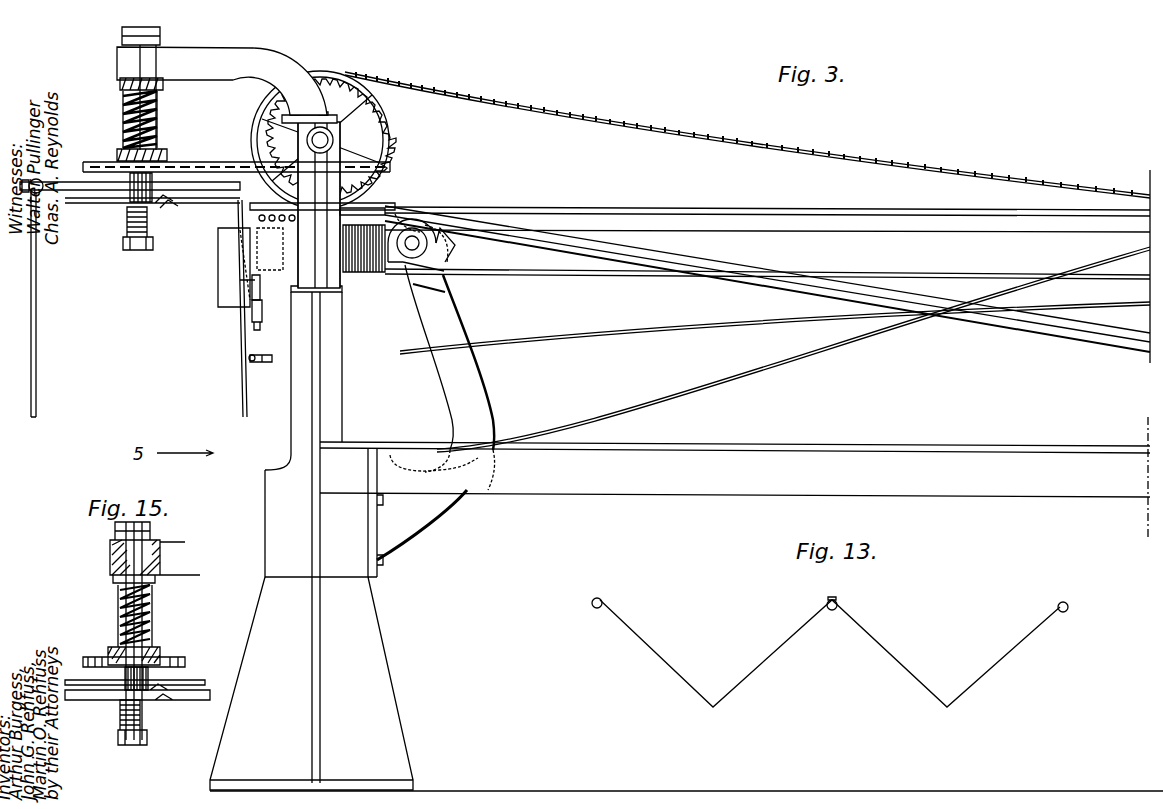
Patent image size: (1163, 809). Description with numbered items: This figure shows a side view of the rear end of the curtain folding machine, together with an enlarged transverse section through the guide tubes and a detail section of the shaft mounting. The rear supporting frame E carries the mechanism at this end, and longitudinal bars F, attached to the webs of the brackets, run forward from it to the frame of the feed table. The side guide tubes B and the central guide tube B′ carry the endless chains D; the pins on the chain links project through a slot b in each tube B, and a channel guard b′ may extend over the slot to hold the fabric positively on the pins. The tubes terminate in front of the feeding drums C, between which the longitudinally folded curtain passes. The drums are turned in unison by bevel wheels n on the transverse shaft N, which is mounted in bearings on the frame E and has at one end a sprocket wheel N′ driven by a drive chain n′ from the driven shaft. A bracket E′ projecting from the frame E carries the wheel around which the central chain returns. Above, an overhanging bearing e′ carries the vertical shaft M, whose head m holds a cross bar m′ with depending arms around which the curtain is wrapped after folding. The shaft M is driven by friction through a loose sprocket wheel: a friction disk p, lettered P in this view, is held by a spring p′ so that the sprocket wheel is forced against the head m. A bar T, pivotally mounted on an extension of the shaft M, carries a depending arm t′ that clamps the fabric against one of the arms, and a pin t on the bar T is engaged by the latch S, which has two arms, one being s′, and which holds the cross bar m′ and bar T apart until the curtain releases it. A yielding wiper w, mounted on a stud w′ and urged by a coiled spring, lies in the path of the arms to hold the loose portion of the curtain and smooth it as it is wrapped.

In FIG. 3, the rear supporting frame E is at (311, 538).
In FIG. 3, the bracket E′ is at (436, 389).
In FIG. 3, the overhanging bearing e′ is at (222, 81).
In FIG. 15, the overhanging bearing e′ is at (155, 552).
In FIG. 3, the transverse shaft N is at (334, 126).
In FIG. 3, the bevel wheels n is at (351, 140).
In FIG. 3, the sprocket wheel N′ is at (395, 132).
In FIG. 3, the drive chain n′ is at (548, 112).
In FIG. 3, the vertical shaft M is at (131, 88).
In FIG. 15, the vertical shaft M is at (146, 631).
In FIG. 3, the spring p′ is at (160, 110).
In FIG. 15, the spring p′ is at (118, 614).
In FIG. 3, the nut P is at (167, 159).
In FIG. 3, the pin t is at (232, 165).
In FIG. 3, the head m is at (87, 186).
In FIG. 15, the head m is at (83, 670).
In FIG. 3, the cross bar m′ is at (56, 192).
In FIG. 15, the cross bar m′ is at (66, 680).
In FIG. 3, the bar T is at (152, 212).
In FIG. 15, the bar T is at (174, 721).
In FIG. 3, the endless chains D is at (322, 236).
In FIG. 3, the yielding wiper w is at (218, 270).
In FIG. 3, the latch S is at (245, 250).
In FIG. 3, the latch arm s′ is at (240, 300).
In FIG. 3, the stud w′ is at (260, 364).
In FIG. 3, the depending arm t′ is at (240, 388).
In FIG. 3, the feeding drums C is at (362, 240).
In FIG. 3, the channel guard b′ is at (725, 210).
In FIG. 13, the channel guard b′ is at (602, 598).
In FIG. 3, the side guide tubes B is at (800, 223).
In FIG. 13, the side guide tubes B is at (598, 608).
In FIG. 3, the longitudinal bars F is at (735, 469).
In FIG. 15, the friction disk p is at (160, 652).
In FIG. 13, the central guide tube B′ is at (831, 612).
In FIG. 13, the slot b is at (592, 603).